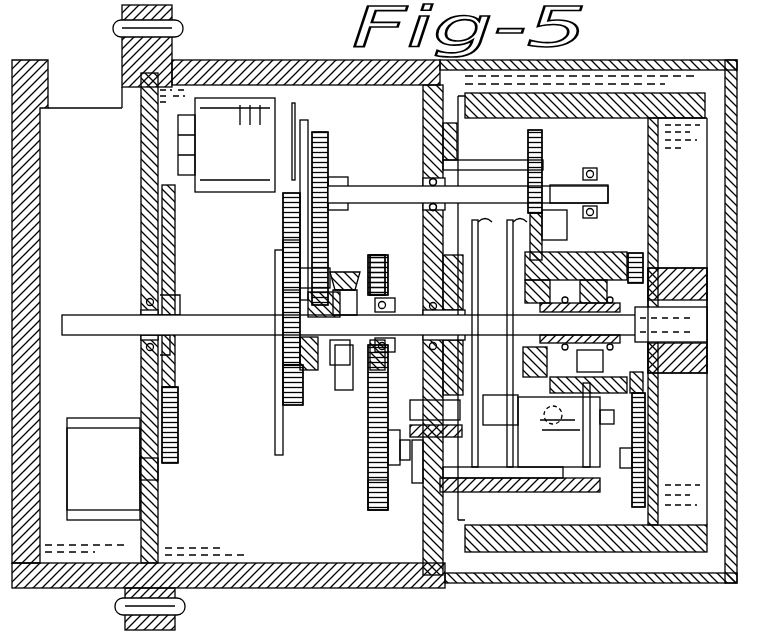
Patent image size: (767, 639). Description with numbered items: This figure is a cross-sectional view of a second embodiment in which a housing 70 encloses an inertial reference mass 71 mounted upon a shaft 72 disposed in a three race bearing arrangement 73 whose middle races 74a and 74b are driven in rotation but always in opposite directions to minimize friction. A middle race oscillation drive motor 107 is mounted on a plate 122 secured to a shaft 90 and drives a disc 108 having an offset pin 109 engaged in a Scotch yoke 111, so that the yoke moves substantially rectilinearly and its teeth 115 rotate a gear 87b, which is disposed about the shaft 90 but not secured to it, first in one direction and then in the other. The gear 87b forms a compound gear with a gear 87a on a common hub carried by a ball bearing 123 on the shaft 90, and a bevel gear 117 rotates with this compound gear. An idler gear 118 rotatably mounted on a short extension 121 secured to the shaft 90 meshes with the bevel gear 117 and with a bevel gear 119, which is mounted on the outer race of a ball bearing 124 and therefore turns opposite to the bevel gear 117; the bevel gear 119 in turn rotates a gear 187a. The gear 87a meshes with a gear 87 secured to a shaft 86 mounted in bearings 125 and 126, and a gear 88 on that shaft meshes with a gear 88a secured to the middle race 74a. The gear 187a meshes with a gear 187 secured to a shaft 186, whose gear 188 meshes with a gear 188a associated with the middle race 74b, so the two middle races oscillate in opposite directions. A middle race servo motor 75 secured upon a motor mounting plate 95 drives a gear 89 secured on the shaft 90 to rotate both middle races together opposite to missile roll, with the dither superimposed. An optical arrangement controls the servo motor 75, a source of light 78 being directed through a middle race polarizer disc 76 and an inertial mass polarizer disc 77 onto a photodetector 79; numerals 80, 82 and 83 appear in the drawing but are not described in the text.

The housing 70 is at (232, 60).
The inertial reference mass 71 is at (652, 100).
The shaft 72 is at (600, 340).
The three race bearing arrangement 73 is at (660, 380).
The middle race 74a is at (566, 432).
The middle race 74b is at (635, 322).
The middle race servo motor 75 is at (118, 510).
The middle race polarizer disc 76 is at (510, 222).
The inertial mass polarizer disc 77 is at (535, 190).
The source of light 78 is at (448, 437).
The photodetector 79 is at (536, 425).
The link 80 is at (560, 415).
The bracket 82 is at (477, 158).
The plate 83 is at (510, 492).
The shaft 86 is at (400, 190).
The gear 87 is at (328, 150).
The gear 87a is at (340, 440).
The gear 87b is at (300, 282).
The gear 88 is at (545, 150).
The gear 88a is at (542, 255).
The gear 89 is at (178, 270).
The shaft 90 is at (215, 335).
The motor mounting plate 95 is at (130, 236).
The middle race oscillation drive motor 107 is at (240, 192).
The disc 108 is at (295, 115).
The pin 109 is at (308, 125).
The Scotch yoke 111 is at (280, 170).
The teeth 115 is at (285, 238).
The bevel gear 117 is at (345, 392).
The idler gear 118 is at (368, 270).
The bevel gear 119 is at (372, 372).
The extension 121 is at (360, 330).
The plate 122 is at (283, 380).
The ball bearing 123 is at (283, 400).
The ball bearing 124 is at (398, 350).
The bearing 125 is at (425, 180).
The bearing 126 is at (597, 176).
The shaft 186 is at (405, 465).
The gear 187 is at (368, 505).
The gear 187a is at (380, 255).
The gear 188 is at (630, 505).
The gear 188a is at (630, 253).